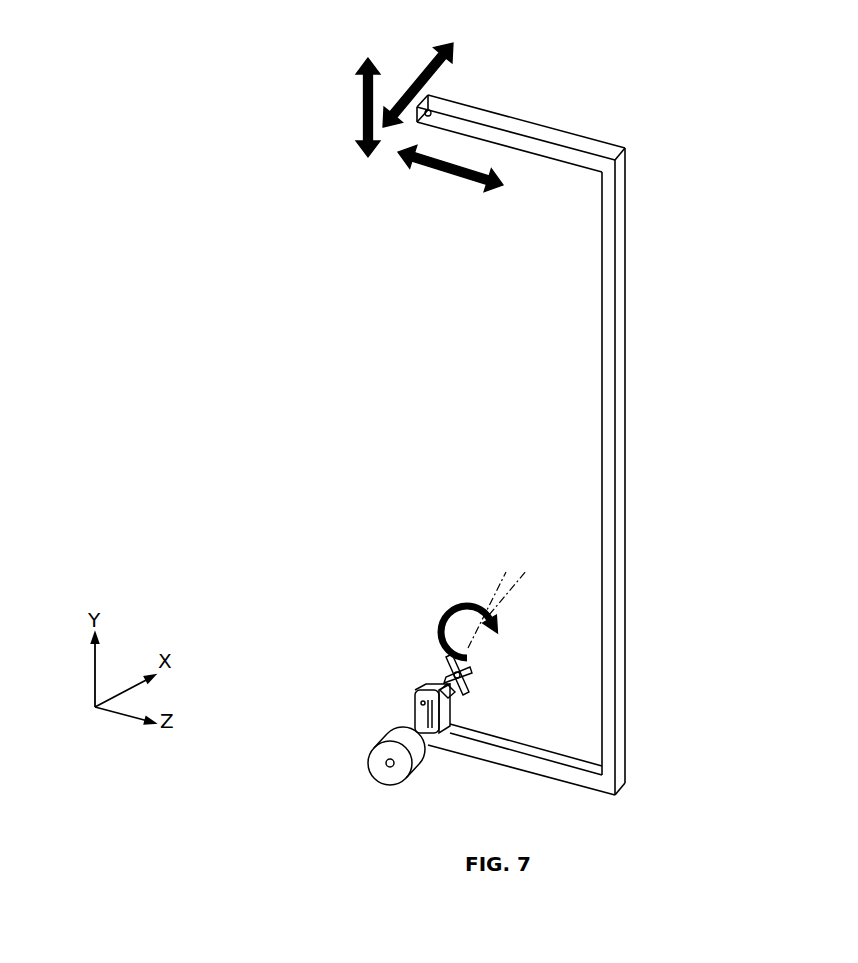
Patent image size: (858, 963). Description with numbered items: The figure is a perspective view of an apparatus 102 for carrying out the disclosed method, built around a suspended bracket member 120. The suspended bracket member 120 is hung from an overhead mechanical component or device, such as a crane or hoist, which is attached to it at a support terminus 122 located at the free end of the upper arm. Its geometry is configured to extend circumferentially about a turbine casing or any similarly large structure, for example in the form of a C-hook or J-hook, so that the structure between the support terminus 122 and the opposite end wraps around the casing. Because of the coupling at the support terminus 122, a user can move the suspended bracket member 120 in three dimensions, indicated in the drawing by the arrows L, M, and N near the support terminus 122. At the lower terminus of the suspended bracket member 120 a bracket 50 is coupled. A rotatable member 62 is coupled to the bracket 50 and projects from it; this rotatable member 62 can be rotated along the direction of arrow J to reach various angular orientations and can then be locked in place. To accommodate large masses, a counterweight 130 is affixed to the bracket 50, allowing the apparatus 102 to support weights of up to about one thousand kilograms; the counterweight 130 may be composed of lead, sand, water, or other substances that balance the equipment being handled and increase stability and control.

The apparatus 102 is at (736, 245).
The suspended bracket member 120 is at (622, 492).
The support terminus 122 is at (431, 113).
The counterweight 130 is at (403, 735).
The bracket 50 is at (422, 693).
The rotatable member 62 is at (448, 677).
The arrow N is at (363, 98).
The arrow L is at (430, 80).
The arrow M is at (440, 172).
The arrow J is at (452, 603).